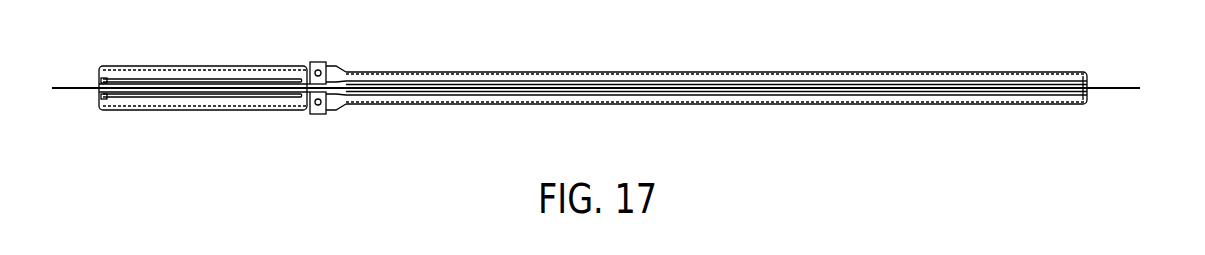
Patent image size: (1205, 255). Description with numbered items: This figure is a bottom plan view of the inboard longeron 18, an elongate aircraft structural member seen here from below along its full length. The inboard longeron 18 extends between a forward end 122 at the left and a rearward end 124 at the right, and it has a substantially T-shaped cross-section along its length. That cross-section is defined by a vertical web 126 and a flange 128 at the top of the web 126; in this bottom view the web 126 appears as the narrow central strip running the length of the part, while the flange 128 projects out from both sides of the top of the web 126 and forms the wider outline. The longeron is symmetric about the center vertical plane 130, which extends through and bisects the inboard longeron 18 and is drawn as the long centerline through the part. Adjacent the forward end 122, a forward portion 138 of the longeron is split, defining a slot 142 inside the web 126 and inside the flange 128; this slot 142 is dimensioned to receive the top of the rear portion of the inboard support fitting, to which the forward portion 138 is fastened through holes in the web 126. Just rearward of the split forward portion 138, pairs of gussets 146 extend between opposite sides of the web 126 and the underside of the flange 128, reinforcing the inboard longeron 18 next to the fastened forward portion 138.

The inboard longeron 18 is at (734, 106).
The forward end 122 is at (97, 94).
The rearward end 124 is at (1087, 97).
The vertical web 126 is at (795, 88).
The flange 128 is at (448, 75).
The center vertical plane 130 is at (1113, 87).
The forward portion 138 is at (221, 112).
The slot 142 is at (97, 84).
The gussets 146 is at (316, 113).